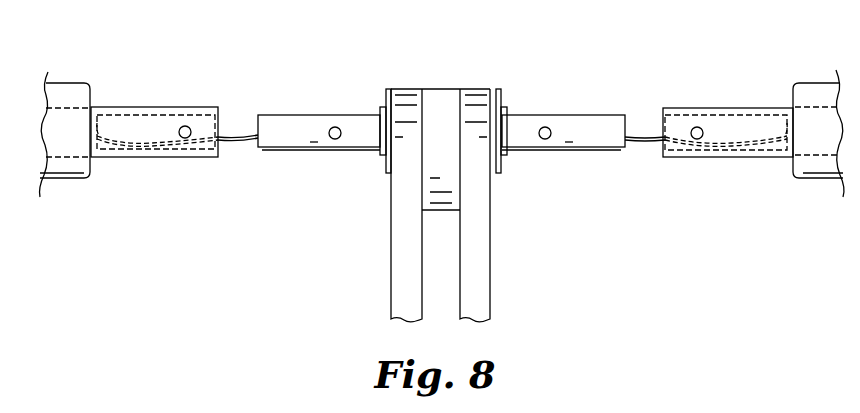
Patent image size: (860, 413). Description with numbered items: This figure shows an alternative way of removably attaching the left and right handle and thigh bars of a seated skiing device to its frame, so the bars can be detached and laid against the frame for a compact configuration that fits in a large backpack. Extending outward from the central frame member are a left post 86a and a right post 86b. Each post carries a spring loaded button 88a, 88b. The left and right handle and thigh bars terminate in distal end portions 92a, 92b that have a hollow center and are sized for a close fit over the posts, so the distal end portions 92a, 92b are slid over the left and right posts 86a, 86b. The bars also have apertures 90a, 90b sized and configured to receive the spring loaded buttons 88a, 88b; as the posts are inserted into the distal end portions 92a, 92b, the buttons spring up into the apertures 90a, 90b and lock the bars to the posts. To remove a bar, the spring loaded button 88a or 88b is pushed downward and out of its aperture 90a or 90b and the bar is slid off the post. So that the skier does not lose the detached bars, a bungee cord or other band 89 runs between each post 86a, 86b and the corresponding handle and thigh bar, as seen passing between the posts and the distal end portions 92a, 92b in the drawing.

The left post 86a is at (293, 122).
The right post 86b is at (590, 122).
The spring loaded button 88a is at (332, 139).
The spring loaded button 88b is at (546, 140).
The bungee cord or other band 89 is at (240, 142).
The aperture 90a is at (182, 139).
The aperture 90b is at (694, 140).
The distal end portion 92a is at (93, 98).
The distal end portion 92b is at (663, 98).